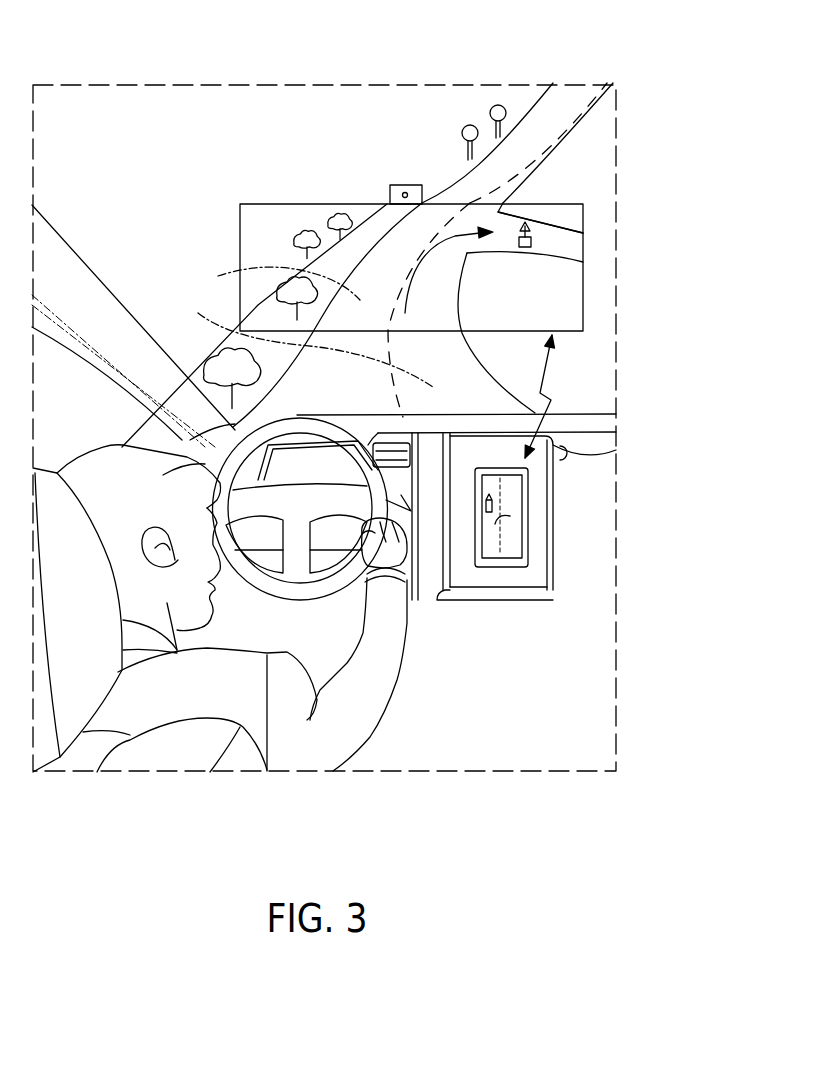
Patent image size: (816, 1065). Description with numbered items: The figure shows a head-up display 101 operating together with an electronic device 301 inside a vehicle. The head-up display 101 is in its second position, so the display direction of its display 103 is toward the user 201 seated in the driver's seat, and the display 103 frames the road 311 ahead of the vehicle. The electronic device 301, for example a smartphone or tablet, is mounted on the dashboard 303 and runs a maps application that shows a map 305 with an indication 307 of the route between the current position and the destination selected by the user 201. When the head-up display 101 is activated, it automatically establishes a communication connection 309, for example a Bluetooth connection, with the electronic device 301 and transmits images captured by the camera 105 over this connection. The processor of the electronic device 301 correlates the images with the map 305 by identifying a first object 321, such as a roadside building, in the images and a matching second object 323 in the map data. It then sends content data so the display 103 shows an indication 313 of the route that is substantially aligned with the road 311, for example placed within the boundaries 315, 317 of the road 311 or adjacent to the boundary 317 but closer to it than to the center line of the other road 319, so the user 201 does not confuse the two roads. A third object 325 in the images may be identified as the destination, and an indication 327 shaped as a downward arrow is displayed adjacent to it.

The head-up display 101 is at (237, 186).
The display 103 is at (238, 217).
The camera 105 is at (404, 184).
The user 201 is at (350, 730).
The electronic device 301 is at (510, 492).
The dashboard 303 is at (580, 478).
The map 305 is at (545, 575).
The indication 307 is at (490, 538).
The communication connection 309 is at (550, 372).
The road 311 is at (296, 346).
The indication 313 is at (465, 264).
The boundary 315 is at (467, 293).
The boundary 317 is at (537, 150).
The other road 319 is at (269, 282).
The first object 321 is at (340, 215).
The second object 323 is at (476, 470).
The third object 325 is at (535, 242).
The indication 327 is at (583, 218).